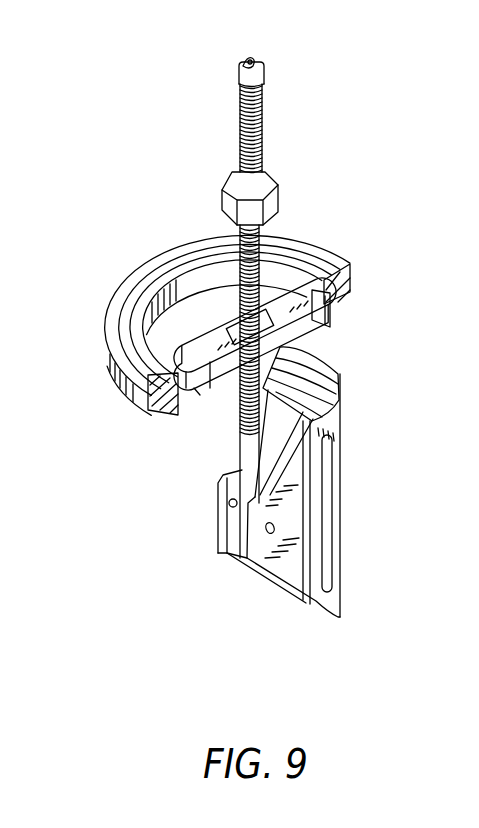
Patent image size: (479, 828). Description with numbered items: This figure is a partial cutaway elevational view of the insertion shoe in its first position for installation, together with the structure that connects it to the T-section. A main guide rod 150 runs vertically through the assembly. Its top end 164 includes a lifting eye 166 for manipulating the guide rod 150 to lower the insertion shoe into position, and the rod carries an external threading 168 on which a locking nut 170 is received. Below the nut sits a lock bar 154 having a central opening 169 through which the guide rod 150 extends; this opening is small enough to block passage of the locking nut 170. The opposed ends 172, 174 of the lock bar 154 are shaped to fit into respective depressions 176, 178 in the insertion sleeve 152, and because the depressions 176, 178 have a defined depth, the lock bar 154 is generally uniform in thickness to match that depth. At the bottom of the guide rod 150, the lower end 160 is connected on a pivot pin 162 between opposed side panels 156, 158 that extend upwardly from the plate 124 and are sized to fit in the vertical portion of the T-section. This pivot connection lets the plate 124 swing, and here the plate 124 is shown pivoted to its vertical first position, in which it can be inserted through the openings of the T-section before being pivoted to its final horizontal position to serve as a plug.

The plate 124 is at (263, 577).
The main guide rod 150 is at (238, 122).
The insertion sleeve 152 is at (293, 247).
The lock bar 154 is at (180, 362).
The side panel 156 is at (237, 558).
The side panel 158 is at (219, 523).
The lower end 160 is at (224, 553).
The pivot pin 162 is at (229, 503).
The top end 164 is at (264, 64).
The lifting eye 166 is at (238, 66).
The external threading 168 is at (257, 138).
The central opening 169 is at (292, 328).
The locking nut 170 is at (222, 195).
The end of lock bar 172 is at (200, 392).
The end of lock bar 174 is at (330, 312).
The depression 176 is at (178, 413).
The depression 178 is at (342, 298).